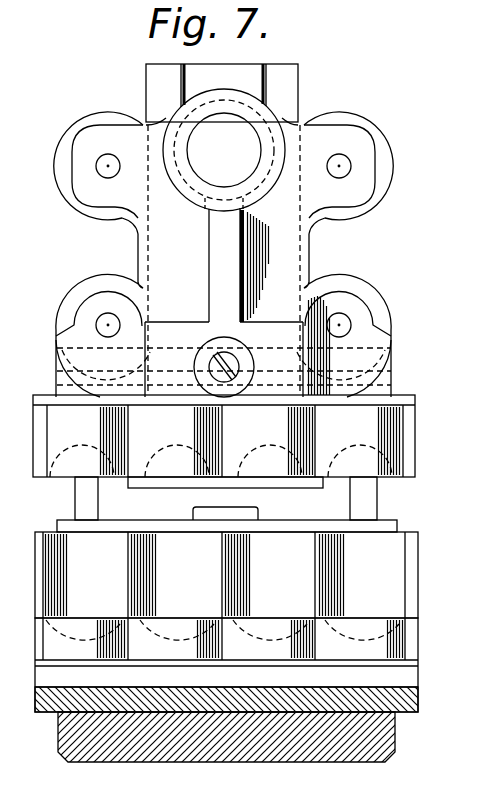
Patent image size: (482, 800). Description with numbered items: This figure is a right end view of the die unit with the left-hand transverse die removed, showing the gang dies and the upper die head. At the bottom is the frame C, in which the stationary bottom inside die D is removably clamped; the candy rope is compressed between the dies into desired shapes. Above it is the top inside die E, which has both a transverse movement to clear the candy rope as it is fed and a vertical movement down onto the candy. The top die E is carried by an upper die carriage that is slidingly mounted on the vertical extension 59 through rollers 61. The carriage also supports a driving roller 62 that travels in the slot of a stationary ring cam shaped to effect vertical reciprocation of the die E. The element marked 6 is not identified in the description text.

The vertical extension 59 is at (287, 68).
The driving roller 62 is at (272, 125).
The rollers 61 is at (87, 130).
The rollers 6 is at (170, 545).
The top inside die E is at (397, 433).
The bottom inside die D is at (400, 642).
The frame C is at (397, 743).